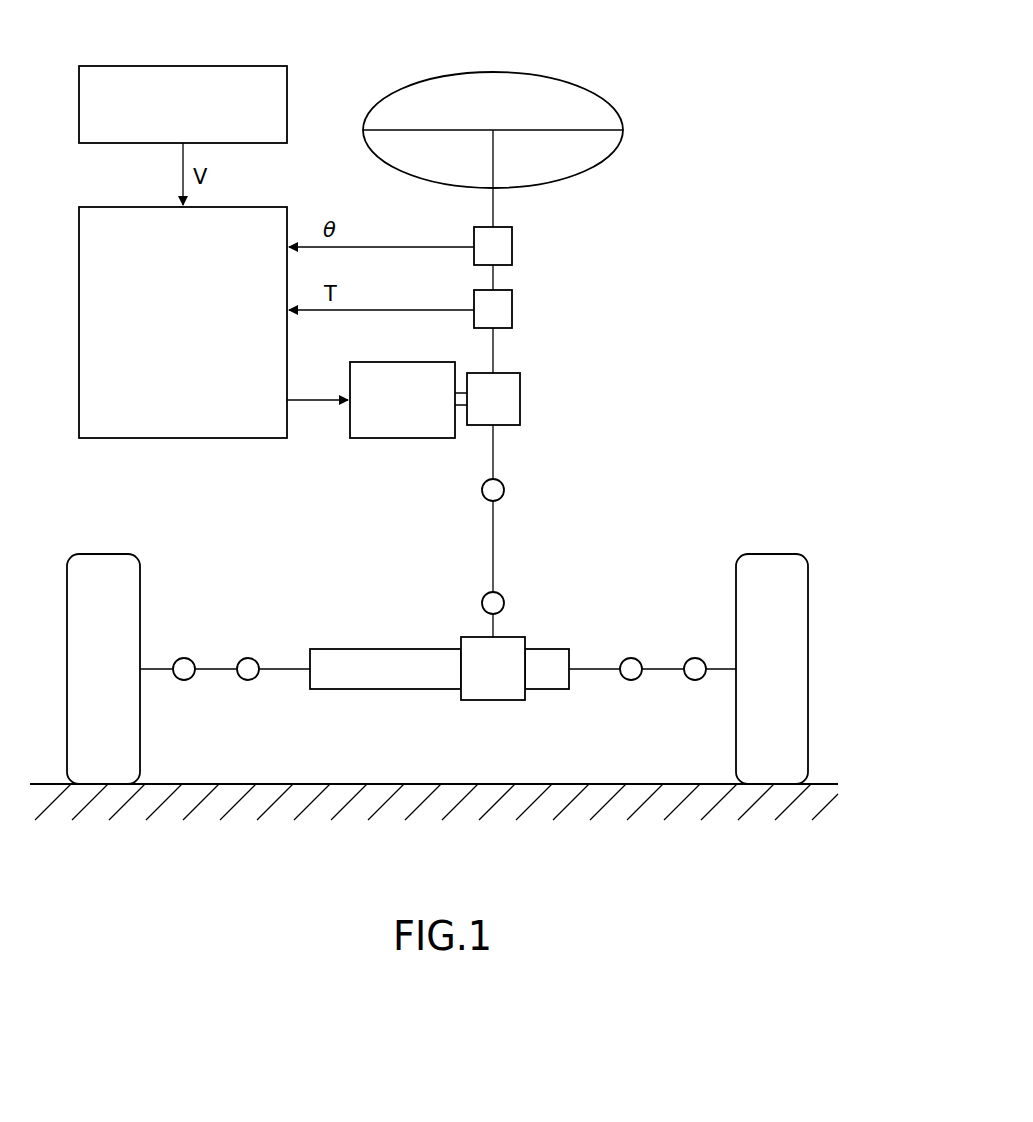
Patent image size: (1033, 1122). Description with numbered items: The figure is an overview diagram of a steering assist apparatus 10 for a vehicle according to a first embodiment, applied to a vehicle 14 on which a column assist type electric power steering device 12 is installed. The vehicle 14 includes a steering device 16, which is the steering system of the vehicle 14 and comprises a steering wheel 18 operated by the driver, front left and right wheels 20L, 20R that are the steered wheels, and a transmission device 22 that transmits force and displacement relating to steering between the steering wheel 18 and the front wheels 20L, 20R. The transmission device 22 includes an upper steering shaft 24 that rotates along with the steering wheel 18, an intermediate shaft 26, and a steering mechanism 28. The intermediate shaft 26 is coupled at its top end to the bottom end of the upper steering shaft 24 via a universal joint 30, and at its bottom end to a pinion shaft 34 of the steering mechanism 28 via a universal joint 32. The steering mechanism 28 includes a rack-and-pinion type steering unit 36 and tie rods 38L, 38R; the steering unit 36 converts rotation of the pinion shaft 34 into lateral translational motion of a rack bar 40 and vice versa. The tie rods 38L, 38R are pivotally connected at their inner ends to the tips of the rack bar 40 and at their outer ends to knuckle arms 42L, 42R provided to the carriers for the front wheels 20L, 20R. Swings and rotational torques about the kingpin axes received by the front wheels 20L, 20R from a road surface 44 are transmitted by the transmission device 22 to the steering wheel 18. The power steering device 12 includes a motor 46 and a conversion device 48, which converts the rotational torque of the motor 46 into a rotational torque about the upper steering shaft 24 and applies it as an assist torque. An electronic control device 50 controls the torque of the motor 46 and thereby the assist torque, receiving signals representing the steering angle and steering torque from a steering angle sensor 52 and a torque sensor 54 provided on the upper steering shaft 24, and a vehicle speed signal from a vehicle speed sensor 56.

The steering assist apparatus 10 is at (92, 45).
The electric power steering device 12 is at (475, 421).
The vehicle 14 is at (550, 103).
The steering device 16 is at (537, 251).
The steering wheel 18 is at (513, 72).
The front left wheel 20L is at (103, 553).
The front right wheel 20R is at (770, 553).
The transmission device 22 is at (515, 531).
The upper steering shaft 24 is at (492, 208).
The intermediate shaft 26 is at (492, 545).
The steering mechanism 28 is at (439, 680).
The universal joint 30 is at (504, 490).
The universal joint 32 is at (504, 603).
The pinion shaft 34 is at (492, 624).
The steering unit 36 is at (398, 645).
The left tie rod 38L is at (213, 665).
The right tie rod 38R is at (661, 665).
The rack bar 40 is at (285, 673).
The left knuckle arm 42L is at (158, 673).
The right knuckle arm 42R is at (717, 673).
The road surface 44 is at (557, 784).
The motor 46 is at (396, 438).
The conversion device 48 is at (505, 373).
The electronic control device 50 is at (166, 379).
The steering angle sensor 52 is at (512, 246).
The torque sensor 54 is at (512, 310).
The vehicle speed sensor 56 is at (231, 66).